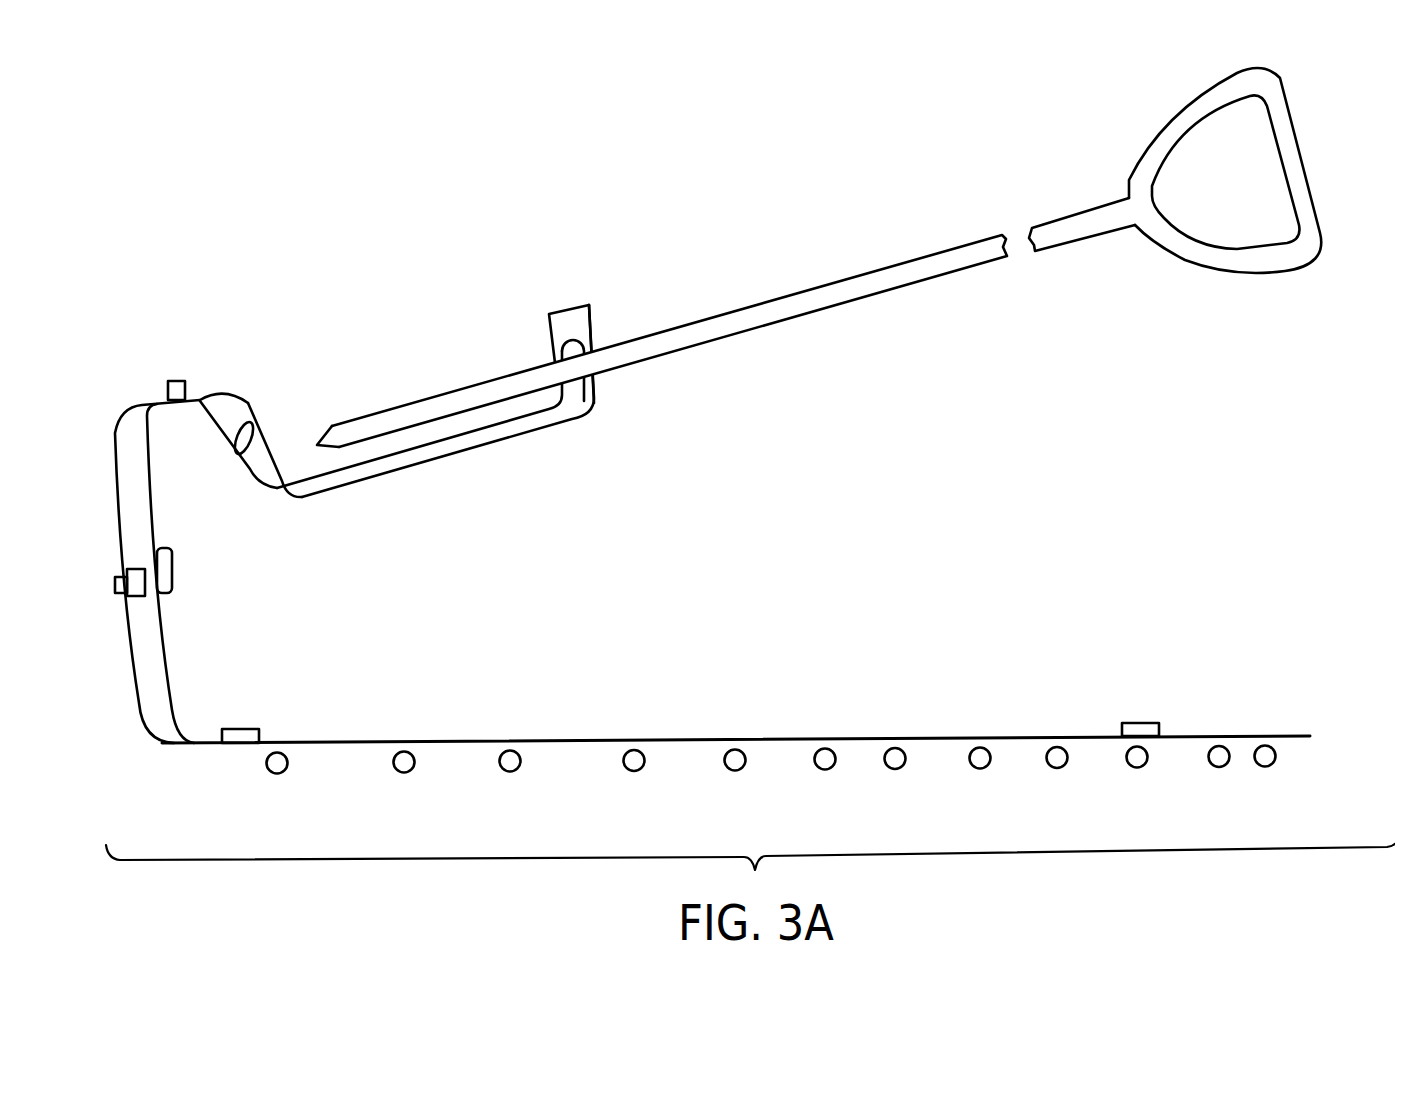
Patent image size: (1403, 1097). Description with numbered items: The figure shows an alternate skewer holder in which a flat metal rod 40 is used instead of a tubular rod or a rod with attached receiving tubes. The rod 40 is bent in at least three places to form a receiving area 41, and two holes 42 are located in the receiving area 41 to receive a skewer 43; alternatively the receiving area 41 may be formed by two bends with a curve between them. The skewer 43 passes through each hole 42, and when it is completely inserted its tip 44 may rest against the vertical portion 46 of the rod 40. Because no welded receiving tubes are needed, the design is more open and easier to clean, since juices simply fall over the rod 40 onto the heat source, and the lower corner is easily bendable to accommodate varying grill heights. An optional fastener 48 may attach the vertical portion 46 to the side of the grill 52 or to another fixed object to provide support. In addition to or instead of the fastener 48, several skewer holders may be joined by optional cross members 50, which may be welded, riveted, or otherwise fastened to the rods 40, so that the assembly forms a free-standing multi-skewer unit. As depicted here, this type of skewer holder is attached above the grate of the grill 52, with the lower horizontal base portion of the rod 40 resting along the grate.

The flat metal rod 40 is at (616, 376).
The receiving area 41 is at (421, 419).
The holes 42 is at (230, 452).
The skewer 43 is at (796, 257).
The tip of the skewer 44 is at (322, 427).
The vertical portion of the rod 46 is at (145, 465).
The fastener 48 is at (170, 570).
The cross members 50 is at (1136, 720).
The grill 52 is at (1275, 755).